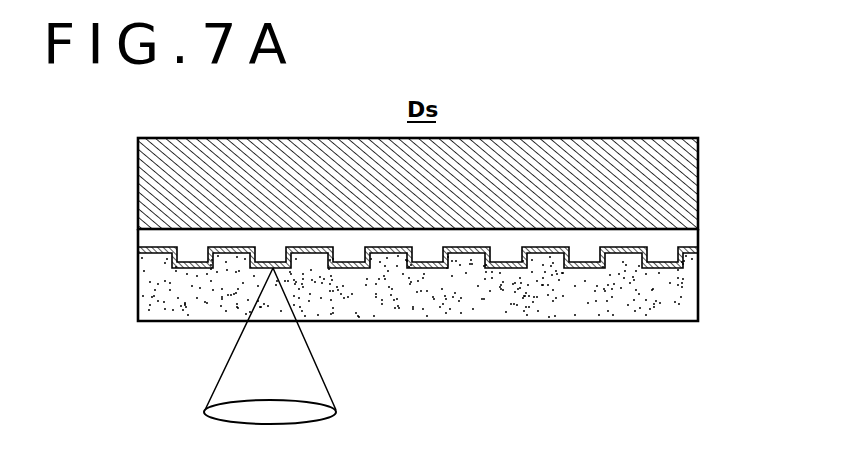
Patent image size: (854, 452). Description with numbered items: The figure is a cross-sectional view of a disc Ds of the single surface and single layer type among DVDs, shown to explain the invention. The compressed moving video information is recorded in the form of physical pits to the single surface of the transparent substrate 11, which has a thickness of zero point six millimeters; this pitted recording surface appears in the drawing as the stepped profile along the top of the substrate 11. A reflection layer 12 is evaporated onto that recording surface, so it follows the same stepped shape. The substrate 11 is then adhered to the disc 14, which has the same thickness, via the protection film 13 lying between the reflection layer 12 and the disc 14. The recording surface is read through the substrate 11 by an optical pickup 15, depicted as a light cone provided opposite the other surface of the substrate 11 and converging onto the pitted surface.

The transparent substrate 11 is at (678, 306).
The reflection layer 12 is at (692, 250).
The protection film 13 is at (683, 238).
The disc 14 is at (684, 186).
The optical pickup 15 is at (318, 423).